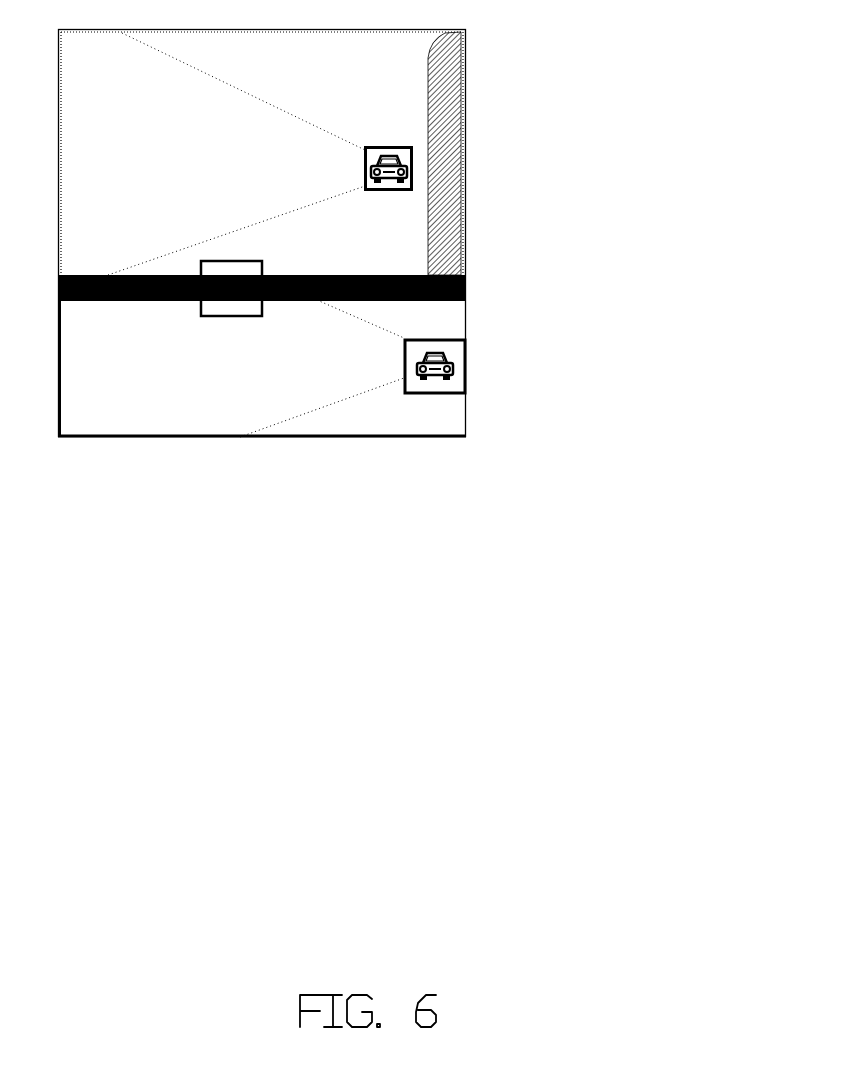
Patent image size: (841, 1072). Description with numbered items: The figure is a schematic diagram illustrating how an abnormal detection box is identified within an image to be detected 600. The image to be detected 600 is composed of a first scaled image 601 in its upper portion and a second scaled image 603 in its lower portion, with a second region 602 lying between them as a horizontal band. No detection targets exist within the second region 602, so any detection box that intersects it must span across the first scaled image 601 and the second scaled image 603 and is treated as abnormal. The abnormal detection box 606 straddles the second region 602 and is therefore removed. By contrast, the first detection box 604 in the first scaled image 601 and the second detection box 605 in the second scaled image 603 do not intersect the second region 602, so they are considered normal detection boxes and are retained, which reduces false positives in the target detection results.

The image to be detected 600 is at (262, 252).
The first scaled image 601 is at (467, 170).
The second region 602 is at (468, 287).
The second scaled image 603 is at (467, 410).
The first detection box 604 is at (414, 146).
The second detection box 605 is at (467, 369).
The abnormal detection box 606 is at (266, 260).